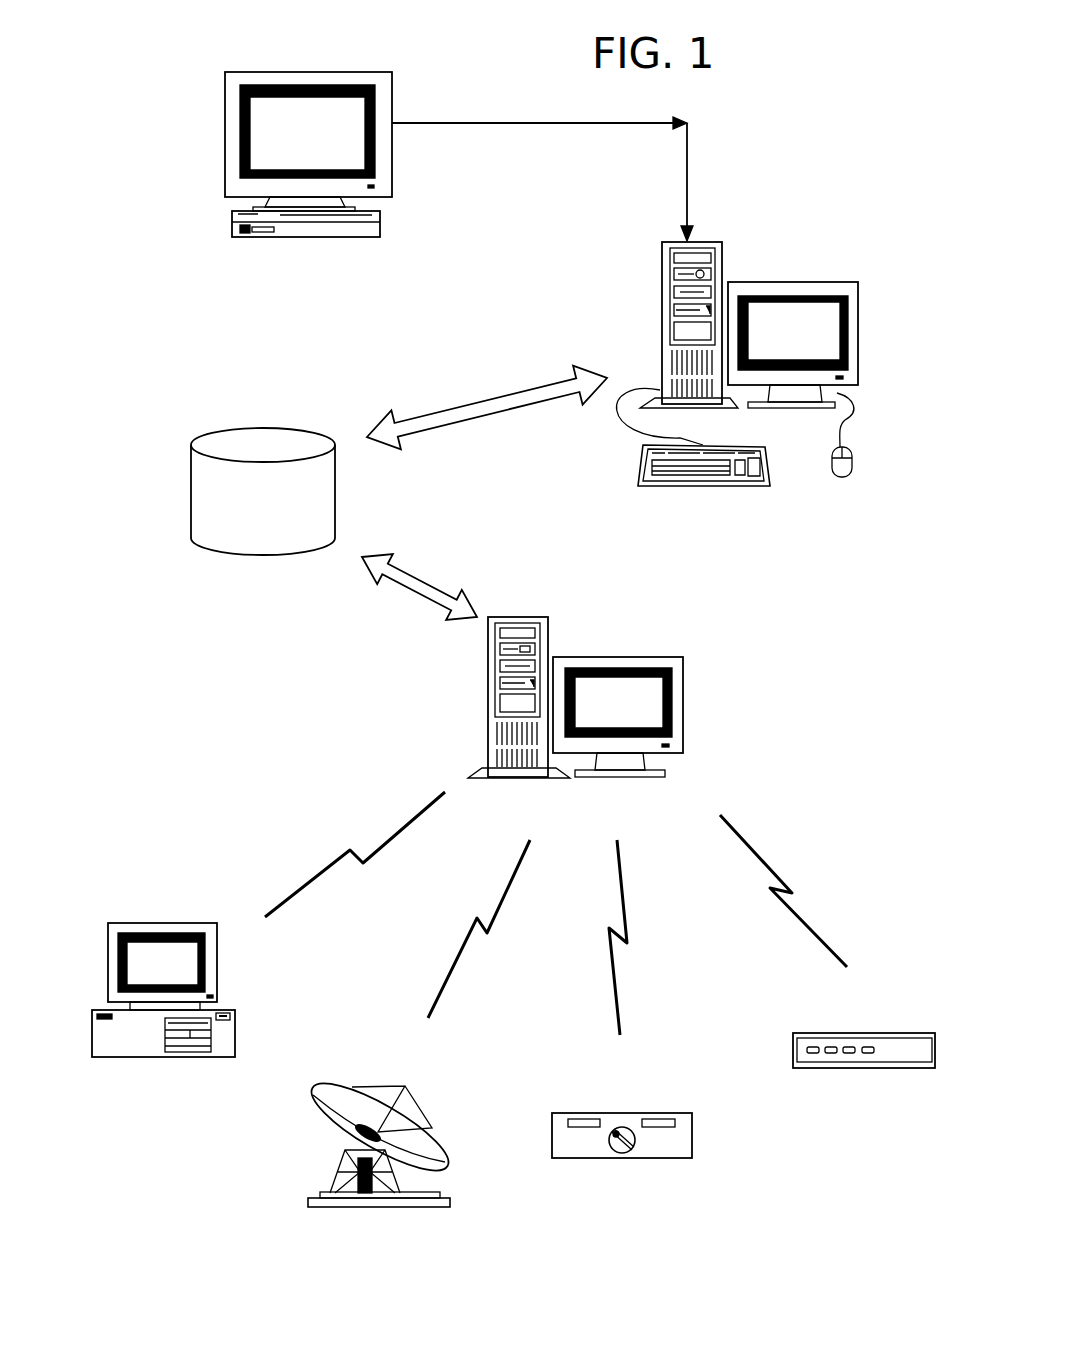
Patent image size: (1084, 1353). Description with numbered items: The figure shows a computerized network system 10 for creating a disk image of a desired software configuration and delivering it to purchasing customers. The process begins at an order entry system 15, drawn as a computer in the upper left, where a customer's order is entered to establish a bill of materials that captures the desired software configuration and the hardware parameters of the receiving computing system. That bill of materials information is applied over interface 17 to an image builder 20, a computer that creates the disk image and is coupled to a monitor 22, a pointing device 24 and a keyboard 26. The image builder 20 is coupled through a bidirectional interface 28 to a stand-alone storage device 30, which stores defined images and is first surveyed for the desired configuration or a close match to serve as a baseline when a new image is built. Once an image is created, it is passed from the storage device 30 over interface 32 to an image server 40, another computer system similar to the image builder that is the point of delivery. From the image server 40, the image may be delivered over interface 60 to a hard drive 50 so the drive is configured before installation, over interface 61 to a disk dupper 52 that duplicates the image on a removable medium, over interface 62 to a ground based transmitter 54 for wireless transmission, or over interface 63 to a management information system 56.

The computerized network system 10 is at (824, 163).
The order entry system 15 is at (233, 96).
The interface 17 is at (482, 128).
The image builder 20 is at (702, 242).
The monitor 22 is at (807, 282).
The pointing device 24 is at (847, 474).
The keyboard 26 is at (682, 488).
The interface 28 is at (442, 420).
The storage device 30 is at (231, 438).
The interface 32 is at (415, 588).
The image server 40 is at (528, 613).
The hard drive 50 is at (827, 1033).
The disk dupper 52 is at (637, 1112).
The ground based transmitter 54 is at (313, 1103).
The management information system 56 is at (217, 973).
The interface 60 is at (775, 903).
The interface 61 is at (600, 937).
The interface 62 is at (472, 913).
The interface 63 is at (338, 843).